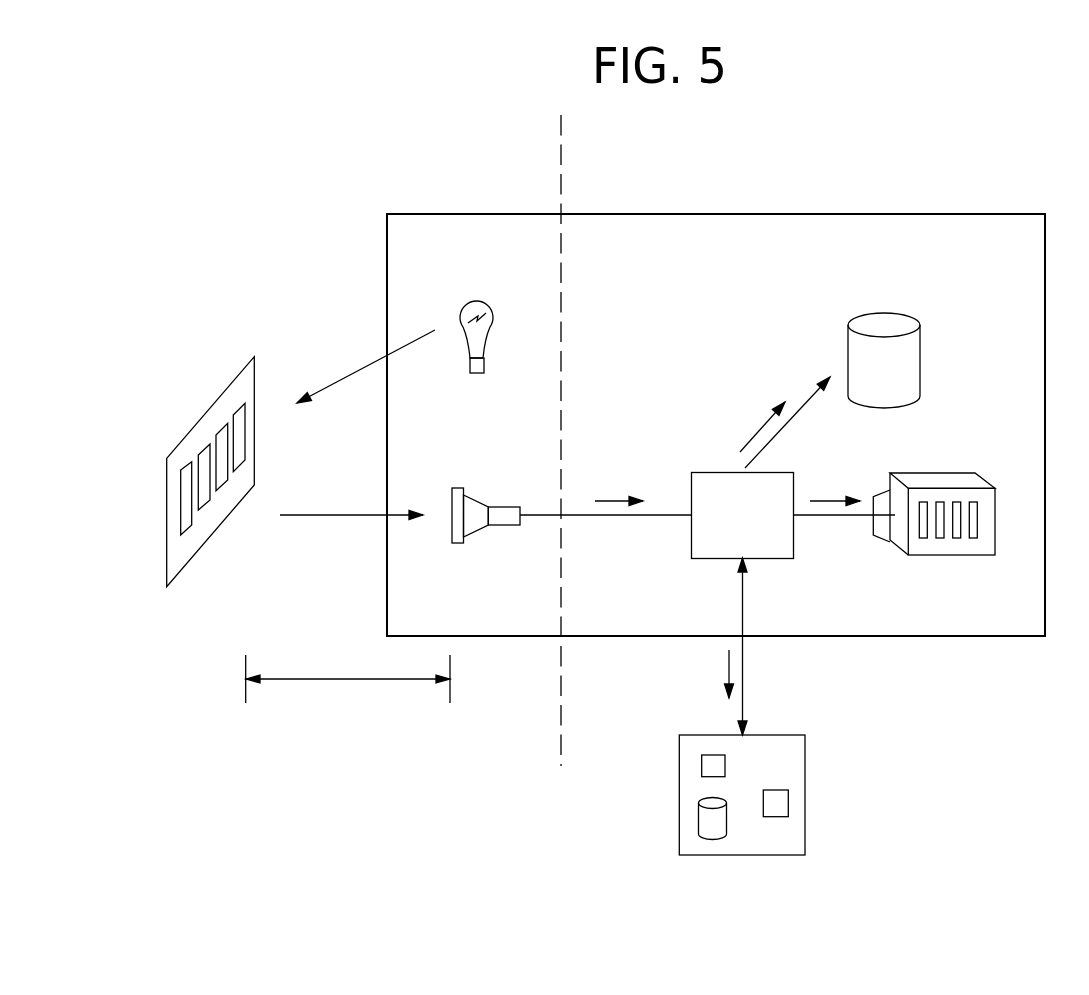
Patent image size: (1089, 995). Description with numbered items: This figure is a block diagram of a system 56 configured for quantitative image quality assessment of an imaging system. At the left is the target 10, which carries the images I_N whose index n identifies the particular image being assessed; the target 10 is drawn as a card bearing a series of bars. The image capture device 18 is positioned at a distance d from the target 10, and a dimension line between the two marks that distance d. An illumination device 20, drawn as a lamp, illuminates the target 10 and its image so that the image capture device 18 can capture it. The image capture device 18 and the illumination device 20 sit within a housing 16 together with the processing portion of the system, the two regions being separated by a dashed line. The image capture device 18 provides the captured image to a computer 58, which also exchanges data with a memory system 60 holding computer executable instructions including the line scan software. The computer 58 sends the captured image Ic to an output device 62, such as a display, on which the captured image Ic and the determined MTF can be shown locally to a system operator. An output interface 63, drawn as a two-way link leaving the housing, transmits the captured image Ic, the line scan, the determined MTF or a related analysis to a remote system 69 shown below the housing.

The target 10 is at (211, 491).
The image index n is at (208, 510).
The reader housing 16 is at (465, 205).
The image capture device 18 is at (468, 533).
The illumination device 20 is at (492, 308).
The system 56 is at (867, 192).
The computer 58 is at (762, 558).
The memory system 60 is at (920, 372).
The output device 62 is at (980, 538).
The captured image Ic is at (977, 514).
The output interface 63 is at (744, 680).
The remote computer system 69 is at (735, 855).
The distance d is at (348, 693).